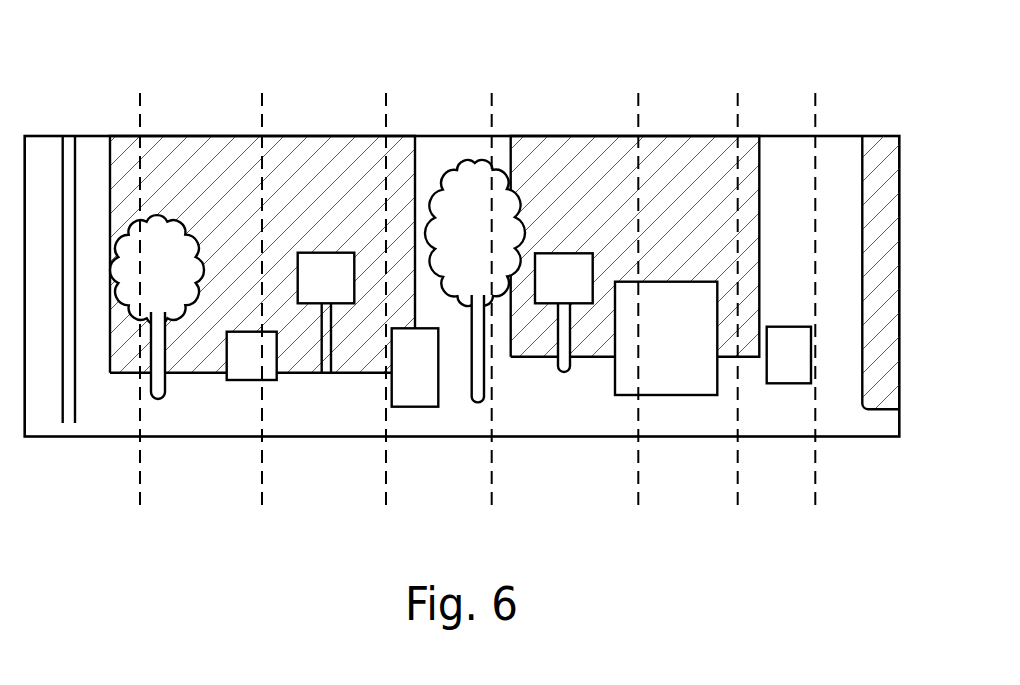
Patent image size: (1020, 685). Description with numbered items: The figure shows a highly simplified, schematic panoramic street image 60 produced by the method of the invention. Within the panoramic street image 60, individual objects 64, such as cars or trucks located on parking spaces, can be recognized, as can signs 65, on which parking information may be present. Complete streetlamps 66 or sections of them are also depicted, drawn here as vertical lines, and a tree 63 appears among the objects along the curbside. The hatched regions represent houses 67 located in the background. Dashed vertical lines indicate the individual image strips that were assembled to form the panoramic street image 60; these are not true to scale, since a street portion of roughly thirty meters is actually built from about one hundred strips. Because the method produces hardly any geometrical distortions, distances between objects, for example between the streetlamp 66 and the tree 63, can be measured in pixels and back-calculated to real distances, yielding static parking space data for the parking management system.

The panoramic street image 60 is at (459, 93).
The tree 63 is at (143, 284).
The individual objects 64 is at (237, 366).
The signs 65 is at (445, 313).
The streetlamps 66 is at (70, 141).
The houses 67 is at (661, 148).